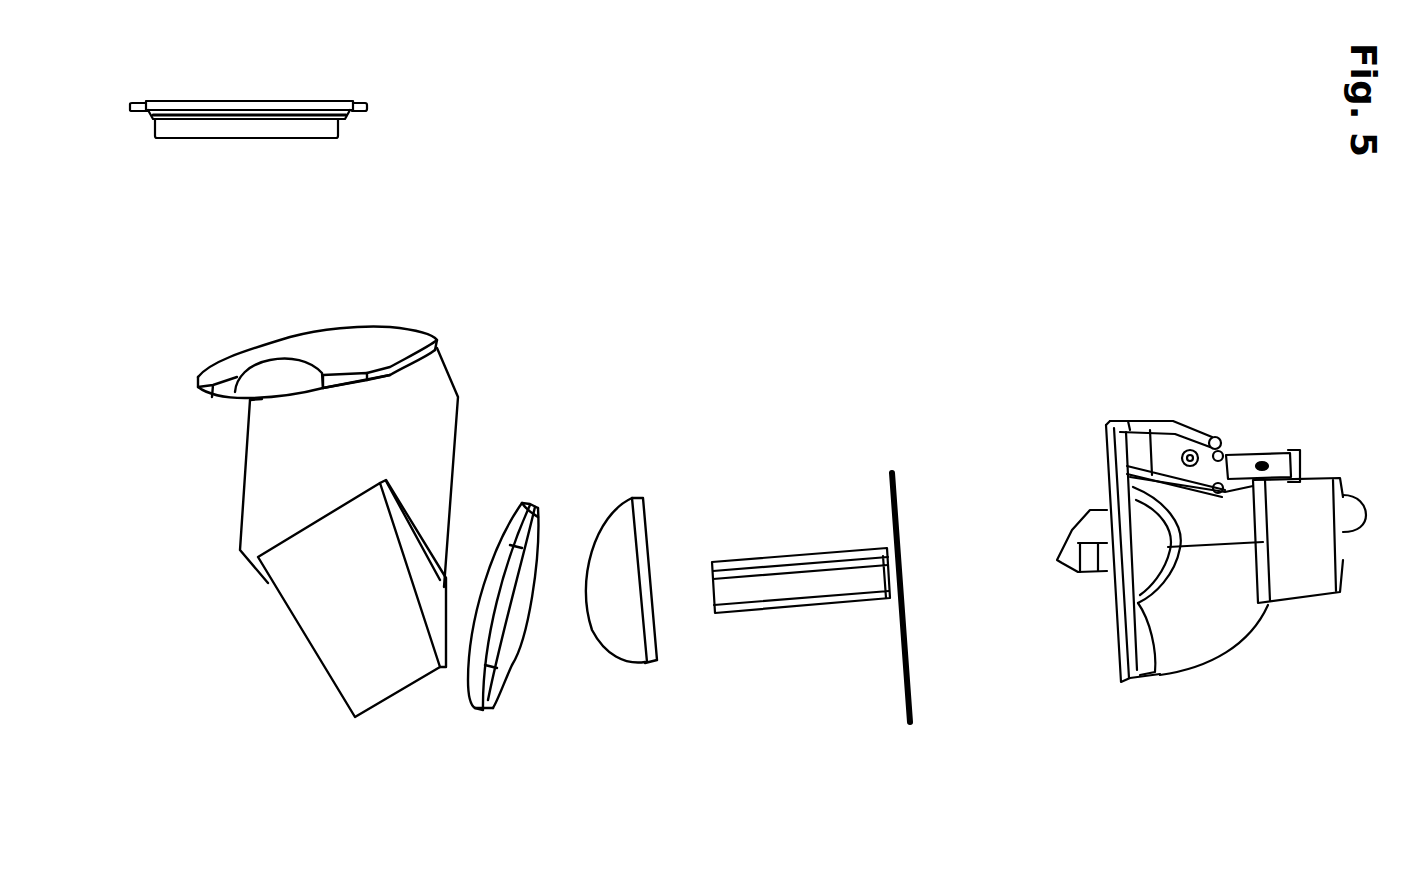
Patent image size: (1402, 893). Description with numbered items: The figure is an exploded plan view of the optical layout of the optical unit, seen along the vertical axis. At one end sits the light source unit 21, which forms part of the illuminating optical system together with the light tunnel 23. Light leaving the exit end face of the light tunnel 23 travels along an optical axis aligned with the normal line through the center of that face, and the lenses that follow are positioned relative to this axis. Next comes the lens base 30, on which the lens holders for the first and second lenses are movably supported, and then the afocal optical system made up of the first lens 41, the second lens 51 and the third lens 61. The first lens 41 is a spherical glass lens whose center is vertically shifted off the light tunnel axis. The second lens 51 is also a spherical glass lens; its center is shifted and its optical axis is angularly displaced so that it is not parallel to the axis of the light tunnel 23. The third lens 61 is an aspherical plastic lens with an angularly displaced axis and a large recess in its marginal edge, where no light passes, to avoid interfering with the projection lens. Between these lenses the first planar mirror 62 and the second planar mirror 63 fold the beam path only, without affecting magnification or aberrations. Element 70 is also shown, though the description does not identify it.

The cover plate 70 is at (283, 101).
The third lens 61 is at (403, 328).
The second planar mirror 63 is at (247, 468).
The first planar mirror 62 is at (309, 639).
The second lens 51 is at (477, 712).
The first lens 41 is at (631, 663).
The light tunnel 23 is at (807, 606).
The lens base 30 is at (901, 487).
The light source unit 21 is at (1215, 663).